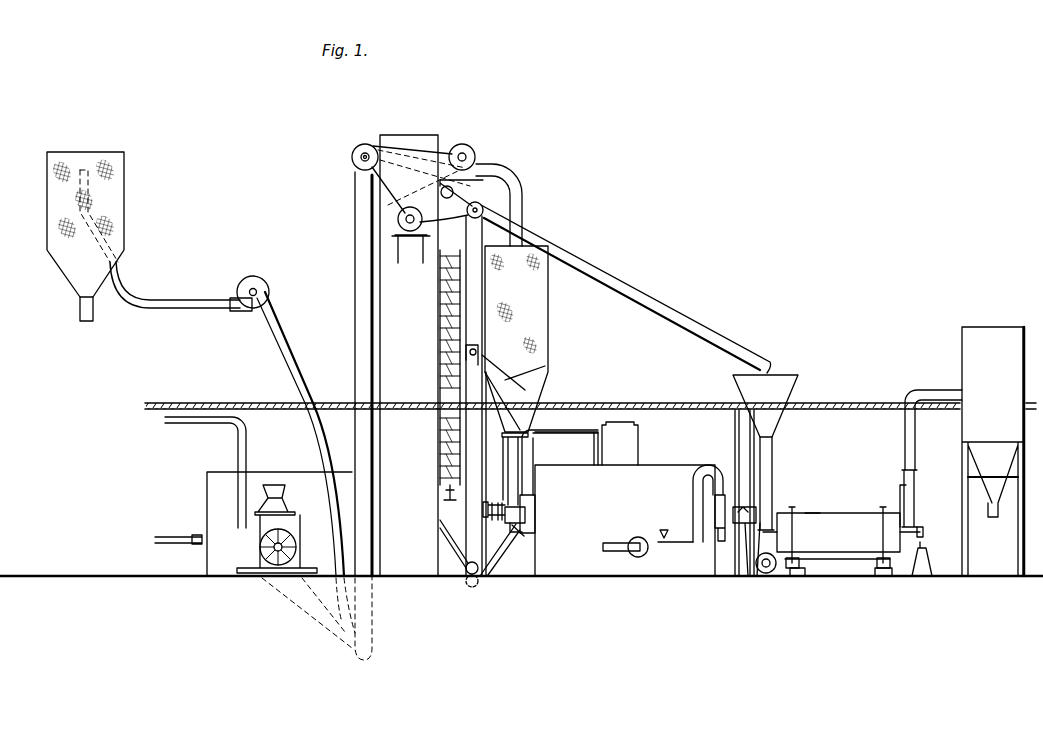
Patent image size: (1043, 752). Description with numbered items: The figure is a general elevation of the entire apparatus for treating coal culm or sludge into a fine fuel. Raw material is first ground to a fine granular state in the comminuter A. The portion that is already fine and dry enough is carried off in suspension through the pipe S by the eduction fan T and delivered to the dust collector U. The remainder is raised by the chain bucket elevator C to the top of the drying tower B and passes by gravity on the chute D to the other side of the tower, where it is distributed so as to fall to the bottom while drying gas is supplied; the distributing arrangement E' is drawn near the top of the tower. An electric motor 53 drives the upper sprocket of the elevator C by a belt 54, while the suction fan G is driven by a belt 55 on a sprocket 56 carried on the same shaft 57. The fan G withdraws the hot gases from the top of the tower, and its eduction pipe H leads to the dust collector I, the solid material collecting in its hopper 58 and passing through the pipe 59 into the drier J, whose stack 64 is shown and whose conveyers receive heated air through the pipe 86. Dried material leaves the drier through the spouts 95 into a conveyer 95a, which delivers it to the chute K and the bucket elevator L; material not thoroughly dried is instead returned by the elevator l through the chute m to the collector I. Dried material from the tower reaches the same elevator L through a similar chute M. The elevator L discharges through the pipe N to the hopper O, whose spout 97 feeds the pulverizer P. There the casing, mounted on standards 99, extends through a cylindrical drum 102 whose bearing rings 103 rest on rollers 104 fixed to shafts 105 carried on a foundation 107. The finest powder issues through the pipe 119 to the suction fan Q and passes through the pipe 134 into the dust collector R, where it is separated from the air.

The dust collector U is at (118, 222).
The eduction fan T is at (240, 284).
The pipe S is at (300, 372).
The chain bucket elevator C is at (355, 242).
The drying tower B is at (382, 278).
The sprocket 56 is at (352, 150).
The shaft 57 is at (365, 155).
The suction fan G is at (462, 144).
The electric motor 53 is at (398, 219).
The belt 54 is at (372, 167).
The belt 55 is at (400, 148).
The chute D is at (418, 172).
The pipe E' is at (324, 354).
The eduction pipe H is at (522, 190).
The pipe N is at (614, 284).
The dust collector I is at (538, 300).
The chute m is at (521, 367).
The hopper 58 is at (530, 400).
The bucket elevator L is at (460, 312).
The elevator l is at (460, 432).
The chute M is at (440, 540).
The chute K is at (505, 540).
The comminuter A is at (262, 551).
The drier J is at (655, 468).
The pipe 86 is at (566, 448).
The stack 64 is at (625, 440).
The pipe 59 is at (520, 475).
The spouts 95 is at (540, 512).
The conveyer 95a is at (525, 534).
The hopper O is at (792, 388).
The spout 97 is at (772, 480).
The pulverizer P is at (840, 505).
The cylindrical drum 102 is at (810, 514).
The bearing rings 103 is at (836, 523).
The rollers 104 is at (800, 560).
The shafts 105 is at (837, 568).
The foundation 107 is at (797, 578).
The standards 99 is at (750, 568).
The pipe 134 is at (930, 390).
The suction fan Q is at (917, 478).
The pipe 119 is at (916, 508).
The dust collector R is at (992, 327).